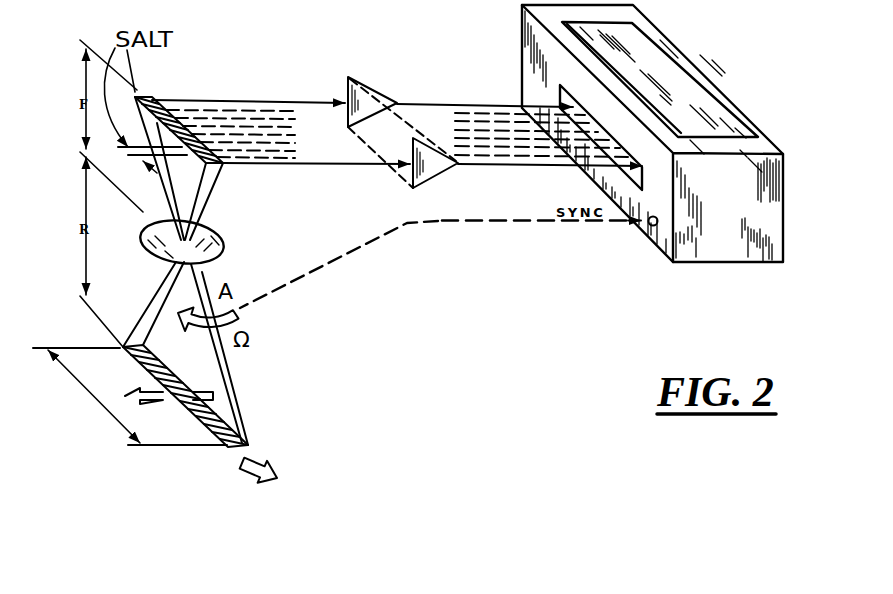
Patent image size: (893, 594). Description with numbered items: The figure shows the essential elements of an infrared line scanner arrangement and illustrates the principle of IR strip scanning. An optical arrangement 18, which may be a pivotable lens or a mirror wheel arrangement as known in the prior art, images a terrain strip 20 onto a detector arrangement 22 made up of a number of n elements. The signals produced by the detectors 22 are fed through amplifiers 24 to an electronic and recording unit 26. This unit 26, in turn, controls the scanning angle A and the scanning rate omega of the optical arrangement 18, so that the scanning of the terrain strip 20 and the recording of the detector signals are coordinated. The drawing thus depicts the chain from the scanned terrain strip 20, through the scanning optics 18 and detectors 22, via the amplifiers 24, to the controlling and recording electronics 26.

The optical arrangement 18 is at (150, 252).
The terrain strip 20 is at (249, 444).
The detector arrangement 22 is at (138, 88).
The amplifiers 24 is at (356, 80).
The electronic and recording unit 26 is at (722, 247).